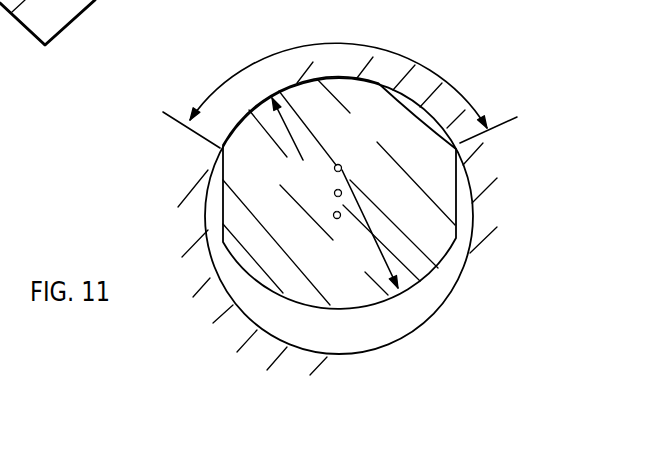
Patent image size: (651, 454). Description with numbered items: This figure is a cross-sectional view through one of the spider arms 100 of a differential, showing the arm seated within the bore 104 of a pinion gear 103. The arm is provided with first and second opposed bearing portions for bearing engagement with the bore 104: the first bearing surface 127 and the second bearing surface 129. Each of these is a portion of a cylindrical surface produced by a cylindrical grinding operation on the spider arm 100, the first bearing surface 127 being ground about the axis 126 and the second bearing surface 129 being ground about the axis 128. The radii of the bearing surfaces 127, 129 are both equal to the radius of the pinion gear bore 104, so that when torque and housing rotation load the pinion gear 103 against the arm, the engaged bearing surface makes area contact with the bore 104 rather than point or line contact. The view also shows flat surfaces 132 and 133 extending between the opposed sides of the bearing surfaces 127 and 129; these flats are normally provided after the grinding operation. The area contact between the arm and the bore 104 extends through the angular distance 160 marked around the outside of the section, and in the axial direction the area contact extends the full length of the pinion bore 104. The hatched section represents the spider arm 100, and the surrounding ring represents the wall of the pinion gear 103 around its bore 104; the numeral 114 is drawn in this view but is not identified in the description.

The spider arm 100 is at (430, 218).
The pinion gear 103 is at (236, 322).
The pinion gear bore 104 is at (452, 296).
The bore 114 is at (342, 192).
The axis 126 is at (340, 219).
The first bearing surface 127 is at (302, 160).
The axis 128 is at (342, 165).
The second bearing surface 129 is at (381, 242).
The flat surface 132 is at (222, 213).
The flat surface 133 is at (457, 183).
The angular distance 160 is at (336, 36).